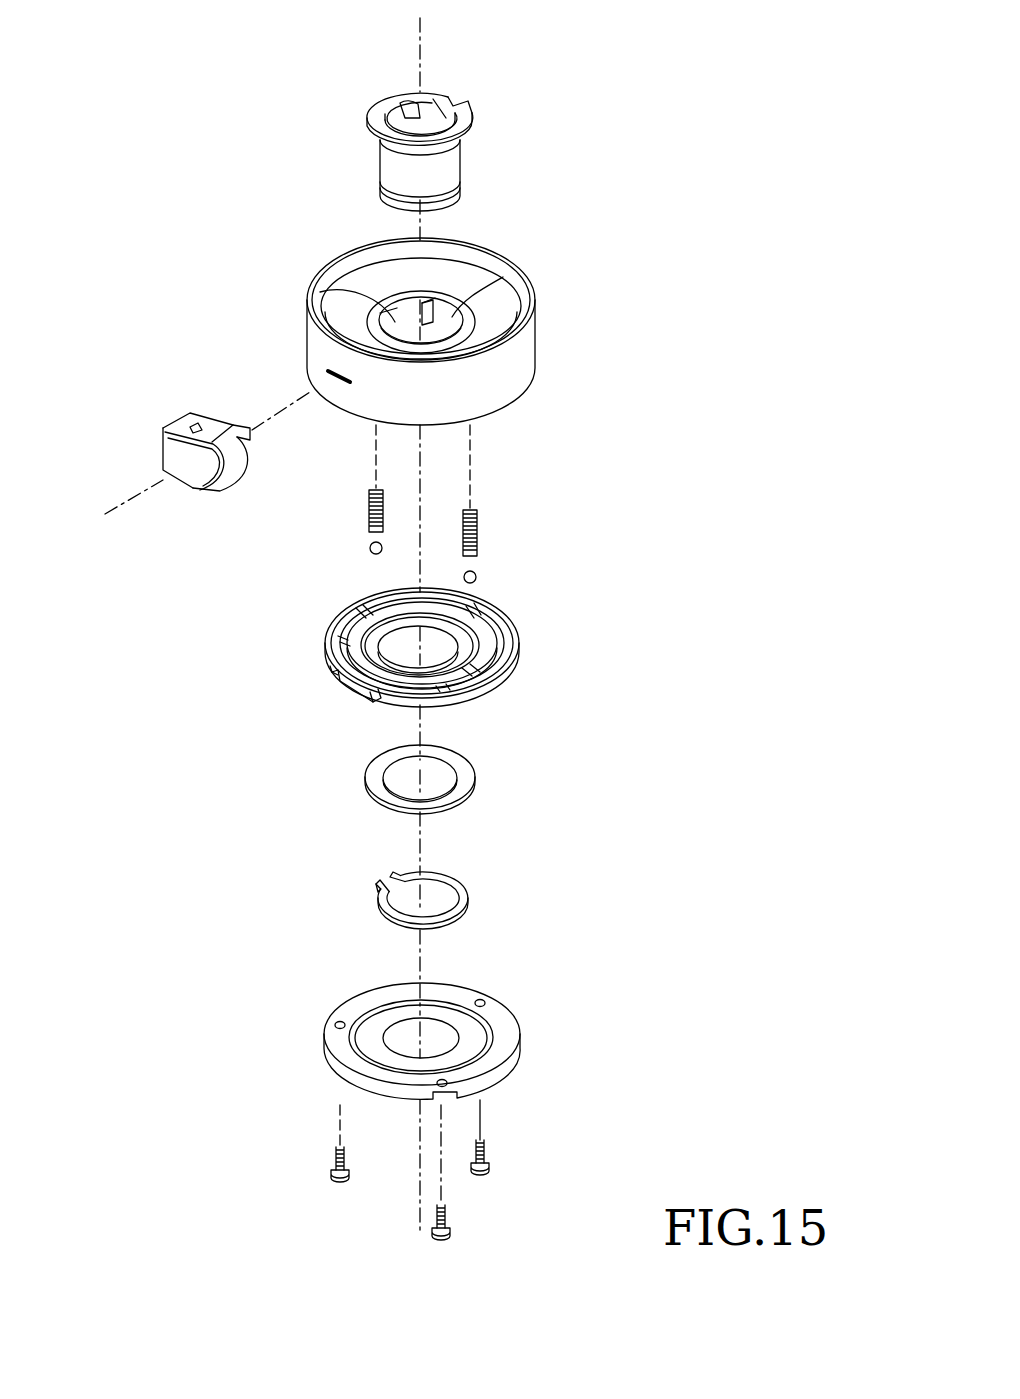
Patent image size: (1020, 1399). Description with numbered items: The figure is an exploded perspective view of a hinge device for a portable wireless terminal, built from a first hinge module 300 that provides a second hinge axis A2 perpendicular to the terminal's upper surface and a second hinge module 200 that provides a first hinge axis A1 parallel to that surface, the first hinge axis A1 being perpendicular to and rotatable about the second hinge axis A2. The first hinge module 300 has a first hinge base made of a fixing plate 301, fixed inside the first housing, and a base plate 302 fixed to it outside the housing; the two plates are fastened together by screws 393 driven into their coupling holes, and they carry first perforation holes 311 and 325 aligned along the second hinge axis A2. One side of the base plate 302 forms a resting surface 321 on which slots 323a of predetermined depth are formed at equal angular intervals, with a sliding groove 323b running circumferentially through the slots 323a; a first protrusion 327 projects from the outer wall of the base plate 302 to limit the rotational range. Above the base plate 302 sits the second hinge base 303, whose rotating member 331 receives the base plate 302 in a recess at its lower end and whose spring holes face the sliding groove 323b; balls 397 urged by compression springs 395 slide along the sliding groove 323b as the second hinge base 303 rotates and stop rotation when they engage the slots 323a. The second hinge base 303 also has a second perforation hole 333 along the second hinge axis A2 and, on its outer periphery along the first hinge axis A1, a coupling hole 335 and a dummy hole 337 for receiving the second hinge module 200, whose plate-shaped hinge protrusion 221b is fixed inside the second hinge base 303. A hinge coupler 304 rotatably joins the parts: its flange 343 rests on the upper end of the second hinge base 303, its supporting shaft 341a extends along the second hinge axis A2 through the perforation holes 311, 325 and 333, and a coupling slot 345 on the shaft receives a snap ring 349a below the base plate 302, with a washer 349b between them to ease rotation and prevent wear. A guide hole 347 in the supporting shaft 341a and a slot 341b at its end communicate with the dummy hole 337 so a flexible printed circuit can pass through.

The second hinge module 200 is at (160, 425).
The hinge protrusion 221b is at (236, 430).
The first hinge module 300 is at (710, 470).
The fixing plate 301 is at (534, 1050).
The base plate 302 is at (505, 698).
The second hinge base 303 is at (548, 318).
The hinge coupler 304 is at (486, 137).
The first perforation hole 311 is at (437, 1035).
The resting surface 321 is at (500, 648).
The slots 323a is at (458, 658).
The sliding groove 323b is at (362, 650).
The first perforation hole 325 is at (398, 668).
The first protrusion 327 is at (330, 677).
The rotating member 331 is at (522, 360).
The second perforation hole 333 is at (385, 302).
The coupling hole 335 is at (343, 382).
The dummy hole 337 is at (512, 272).
The supporting shaft 341a is at (452, 162).
The slot 341b is at (445, 117).
The flange 343 is at (372, 118).
The coupling slot 345 is at (382, 176).
The guide hole 347 is at (402, 115).
The snap ring 349a is at (464, 892).
The washer 349b is at (470, 773).
The screws 393 is at (486, 1150).
The compression springs 395 is at (480, 530).
The balls 397 is at (478, 577).
The first hinge axis A1 is at (130, 498).
The second hinge axis A2 is at (422, 43).